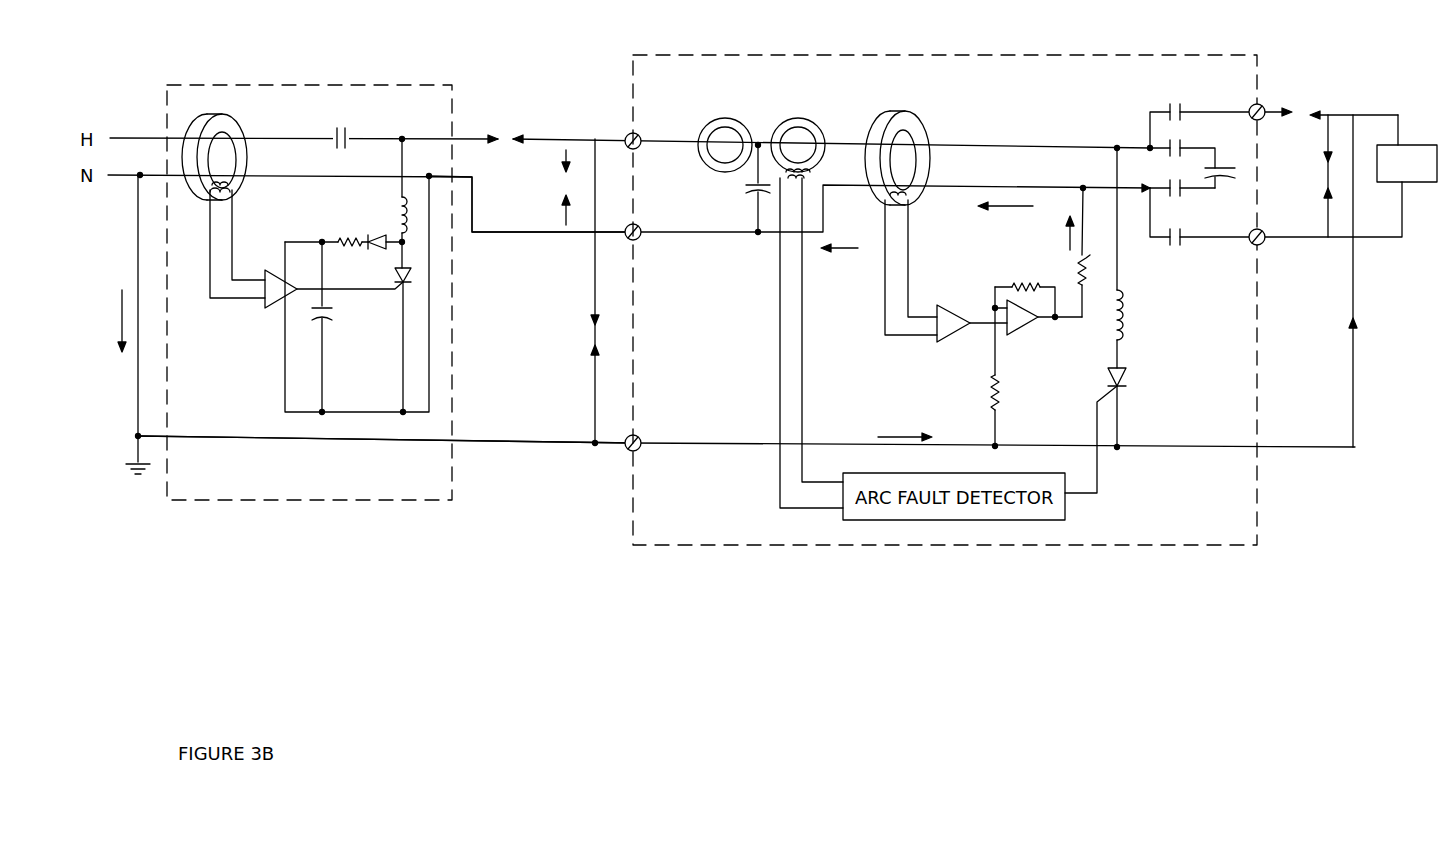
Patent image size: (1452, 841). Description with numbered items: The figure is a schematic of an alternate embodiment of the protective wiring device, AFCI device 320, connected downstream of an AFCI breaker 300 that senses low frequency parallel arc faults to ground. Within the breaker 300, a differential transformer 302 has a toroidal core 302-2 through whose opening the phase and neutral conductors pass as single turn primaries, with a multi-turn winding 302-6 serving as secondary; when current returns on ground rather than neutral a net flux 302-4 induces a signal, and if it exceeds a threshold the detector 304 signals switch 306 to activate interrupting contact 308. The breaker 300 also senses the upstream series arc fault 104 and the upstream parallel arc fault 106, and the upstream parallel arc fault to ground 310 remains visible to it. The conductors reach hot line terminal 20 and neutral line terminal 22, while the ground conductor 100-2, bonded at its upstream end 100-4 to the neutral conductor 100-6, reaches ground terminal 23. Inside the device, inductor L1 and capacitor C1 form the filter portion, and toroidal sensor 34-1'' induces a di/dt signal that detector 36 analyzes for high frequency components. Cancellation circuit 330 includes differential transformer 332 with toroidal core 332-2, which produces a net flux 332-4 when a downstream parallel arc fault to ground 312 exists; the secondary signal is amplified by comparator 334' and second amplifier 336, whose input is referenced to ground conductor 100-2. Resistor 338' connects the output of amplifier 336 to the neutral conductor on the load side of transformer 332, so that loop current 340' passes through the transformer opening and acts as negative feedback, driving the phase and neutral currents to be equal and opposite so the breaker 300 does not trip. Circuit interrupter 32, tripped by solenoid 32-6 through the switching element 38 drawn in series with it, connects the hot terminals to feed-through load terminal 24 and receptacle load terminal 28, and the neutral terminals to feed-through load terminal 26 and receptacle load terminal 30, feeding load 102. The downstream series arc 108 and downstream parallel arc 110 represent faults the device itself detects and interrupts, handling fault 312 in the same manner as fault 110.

The AFCI breaker 300 is at (310, 78).
The differential transformer 302 is at (205, 103).
The net flux 302-4 is at (170, 150).
The toroidal core 302-2 is at (225, 125).
The multi-turn winding 302-6 is at (235, 196).
The interrupting contact 308 is at (362, 125).
The detector 304 is at (274, 308).
The switch 306 is at (383, 313).
The loop 340' is at (576, 321).
The upstream end 100-4 is at (132, 432).
The spark gap 104 is at (502, 120).
The hot line terminal 20 is at (622, 128).
The spark gap 106 is at (555, 182).
The neutral conductor 100-6 is at (498, 240).
The neutral line terminal 22 is at (622, 248).
The arc fault 310 is at (567, 326).
The ground conductor 100-2 is at (480, 455).
The ground terminal 23 is at (615, 462).
The AFCI device 320 is at (862, 47).
The inductor L1 is at (710, 150).
The capacitor C1 is at (742, 188).
The toroidal sensor 34-1'' is at (789, 290).
The differential transformer 332 is at (917, 90).
The net flux 332-4 is at (863, 130).
The toroidal core 332-2 is at (920, 130).
The cancellation circuit 330 is at (860, 315).
The comparator 334' is at (942, 338).
The second amplifier 336 is at (1036, 333).
The detector 36 is at (1032, 470).
The resistor 338' is at (1127, 252).
The solenoid 32-6 is at (1129, 320).
The silicon controlled rectifier 38 is at (1133, 386).
The circuit interrupter 32 is at (1158, 159).
The hot receptacle load terminal 28 is at (1228, 154).
The neutral receptacle load terminal 30 is at (1199, 212).
The hot feed-through load terminal 24 is at (1268, 98).
The neutral feed-through load terminal 26 is at (1268, 250).
The spark gap 108 is at (1302, 102).
The load 102 is at (1417, 120).
The spark gap 110 is at (1318, 175).
The arc fault 312 is at (1338, 347).